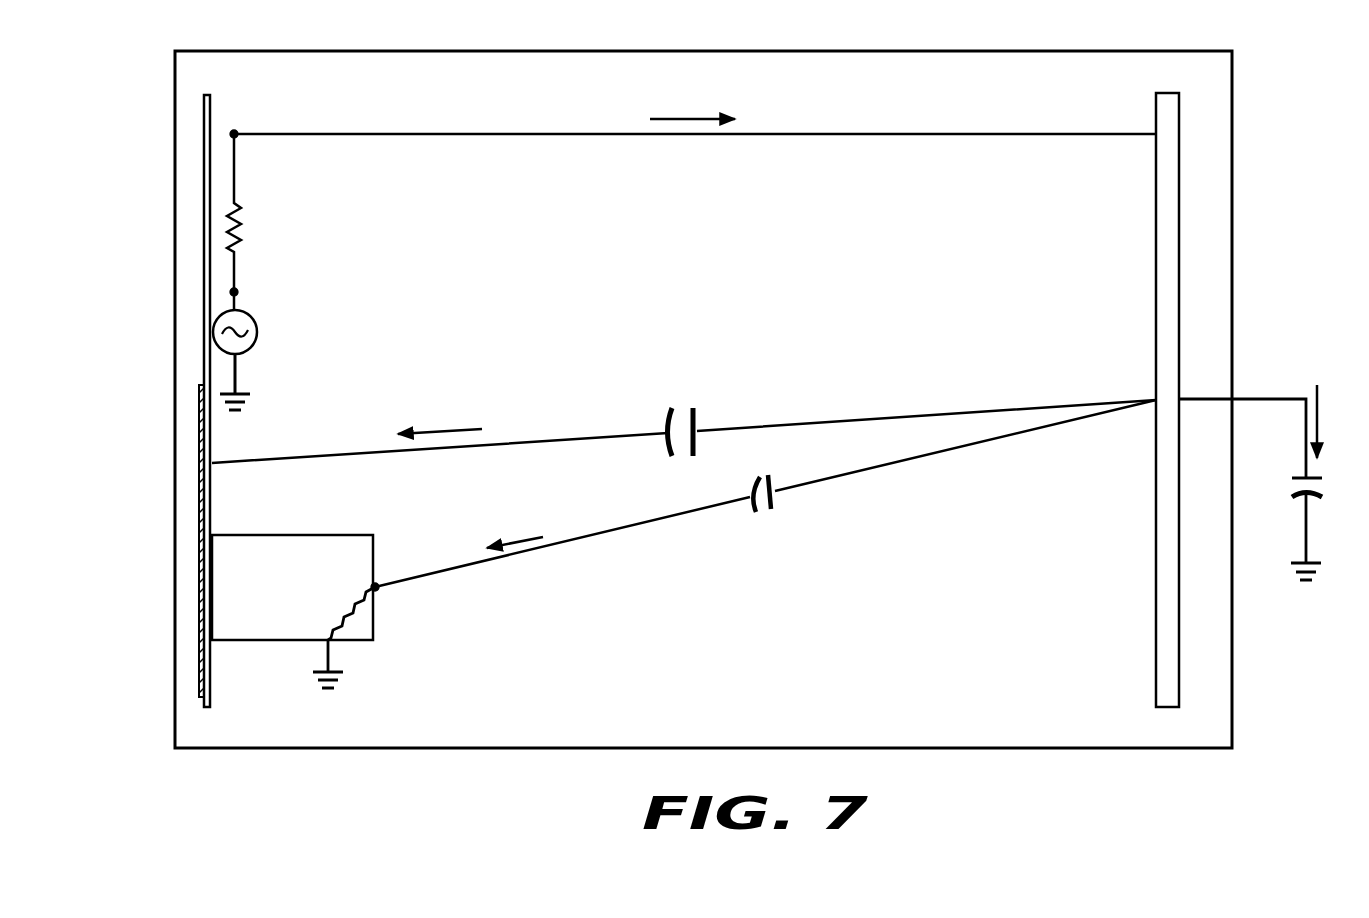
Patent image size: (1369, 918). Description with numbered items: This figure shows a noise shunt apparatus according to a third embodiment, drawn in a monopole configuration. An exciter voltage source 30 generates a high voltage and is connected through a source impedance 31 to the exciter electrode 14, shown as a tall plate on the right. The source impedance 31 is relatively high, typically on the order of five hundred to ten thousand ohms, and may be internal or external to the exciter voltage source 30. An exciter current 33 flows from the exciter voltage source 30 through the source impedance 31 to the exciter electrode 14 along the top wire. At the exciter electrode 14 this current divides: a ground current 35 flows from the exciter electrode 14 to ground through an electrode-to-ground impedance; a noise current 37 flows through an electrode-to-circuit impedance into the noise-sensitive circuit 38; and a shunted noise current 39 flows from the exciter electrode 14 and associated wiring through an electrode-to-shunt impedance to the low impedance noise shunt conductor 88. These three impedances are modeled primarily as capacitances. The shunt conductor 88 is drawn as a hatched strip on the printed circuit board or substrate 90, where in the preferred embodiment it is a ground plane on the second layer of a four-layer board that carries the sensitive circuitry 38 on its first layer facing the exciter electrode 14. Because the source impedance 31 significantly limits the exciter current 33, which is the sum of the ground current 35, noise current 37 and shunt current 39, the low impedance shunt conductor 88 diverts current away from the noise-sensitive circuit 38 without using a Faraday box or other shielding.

The exciter electrode 14 is at (1180, 323).
The exciter voltage source 30 is at (257, 333).
The source impedance (Re) 31 is at (241, 228).
The exciter current (Ie) 33 is at (705, 120).
The ground current (Ig) 35 is at (1319, 405).
The noise current (Ic) 37 is at (535, 537).
The noise-sensitive circuit 38 is at (346, 534).
The shunted noise current (Is) 39 is at (467, 429).
The low impedance noise shunt conductor 88 is at (199, 432).
The printed circuit board or substrate 90 is at (203, 190).